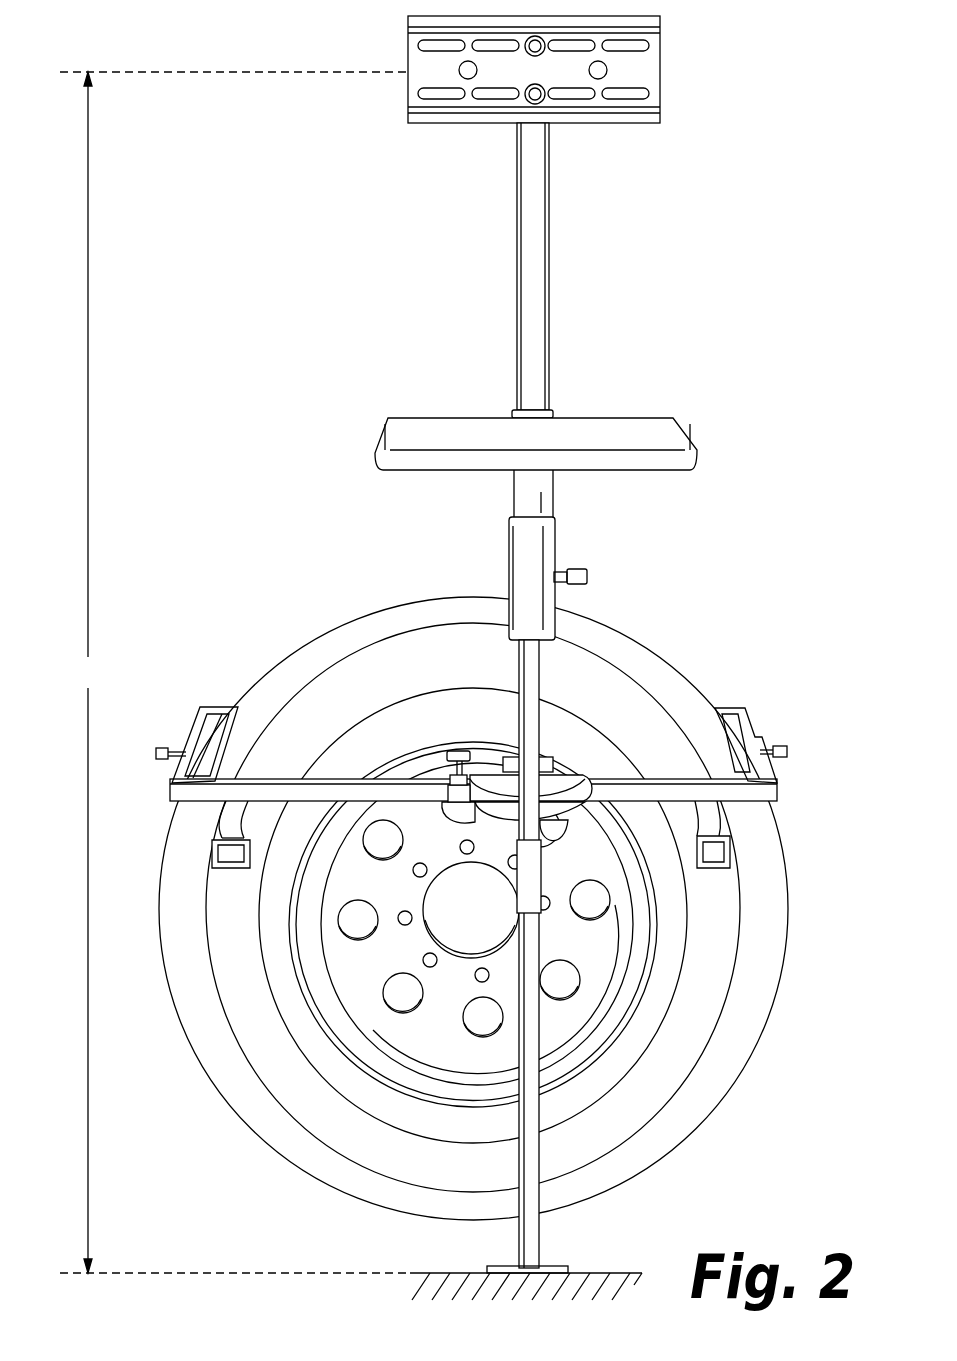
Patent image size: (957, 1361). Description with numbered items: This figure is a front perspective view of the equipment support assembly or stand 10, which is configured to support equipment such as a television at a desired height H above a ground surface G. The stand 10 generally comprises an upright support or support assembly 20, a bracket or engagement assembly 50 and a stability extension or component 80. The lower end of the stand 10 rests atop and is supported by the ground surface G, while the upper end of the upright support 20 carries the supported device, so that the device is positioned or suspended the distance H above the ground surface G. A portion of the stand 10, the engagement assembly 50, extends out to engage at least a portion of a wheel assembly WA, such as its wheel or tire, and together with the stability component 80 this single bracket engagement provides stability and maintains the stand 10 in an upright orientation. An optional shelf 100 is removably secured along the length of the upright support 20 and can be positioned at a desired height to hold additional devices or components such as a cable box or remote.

The equipment support assembly or stand 10 is at (290, 182).
The upright support or support assembly 20 is at (735, 337).
The shelf 100 is at (712, 431).
The bracket or engagement assembly 50 is at (775, 719).
The stability extension or component 80 is at (506, 1097).
The ground surface G is at (613, 1273).
The wheel assembly WA is at (226, 1133).
The height H is at (233, 672).